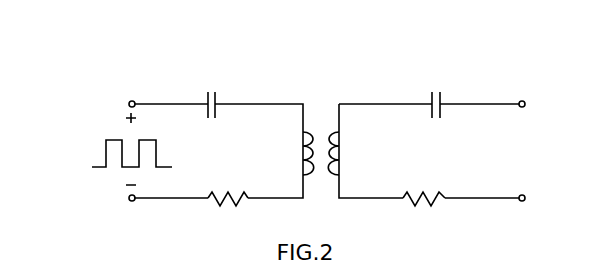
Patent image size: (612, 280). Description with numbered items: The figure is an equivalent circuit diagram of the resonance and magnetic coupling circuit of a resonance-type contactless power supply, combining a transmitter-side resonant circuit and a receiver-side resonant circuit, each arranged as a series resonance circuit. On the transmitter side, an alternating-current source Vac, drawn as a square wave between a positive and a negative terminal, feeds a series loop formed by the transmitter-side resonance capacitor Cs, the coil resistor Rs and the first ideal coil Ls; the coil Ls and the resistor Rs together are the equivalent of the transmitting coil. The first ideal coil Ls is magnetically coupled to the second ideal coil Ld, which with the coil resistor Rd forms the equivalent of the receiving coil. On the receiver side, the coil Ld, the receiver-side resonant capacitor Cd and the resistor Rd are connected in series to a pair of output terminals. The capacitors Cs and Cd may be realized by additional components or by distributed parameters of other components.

The AC input voltage Vac is at (114, 154).
The transmitter-side resonance capacitor Cs is at (213, 91).
The coil resistor Rs is at (228, 184).
The first ideal coil Ls is at (289, 153).
The second ideal coil Ld is at (357, 153).
The receiver-side resonant capacitor Cd is at (434, 90).
The coil resistor Rd is at (424, 188).